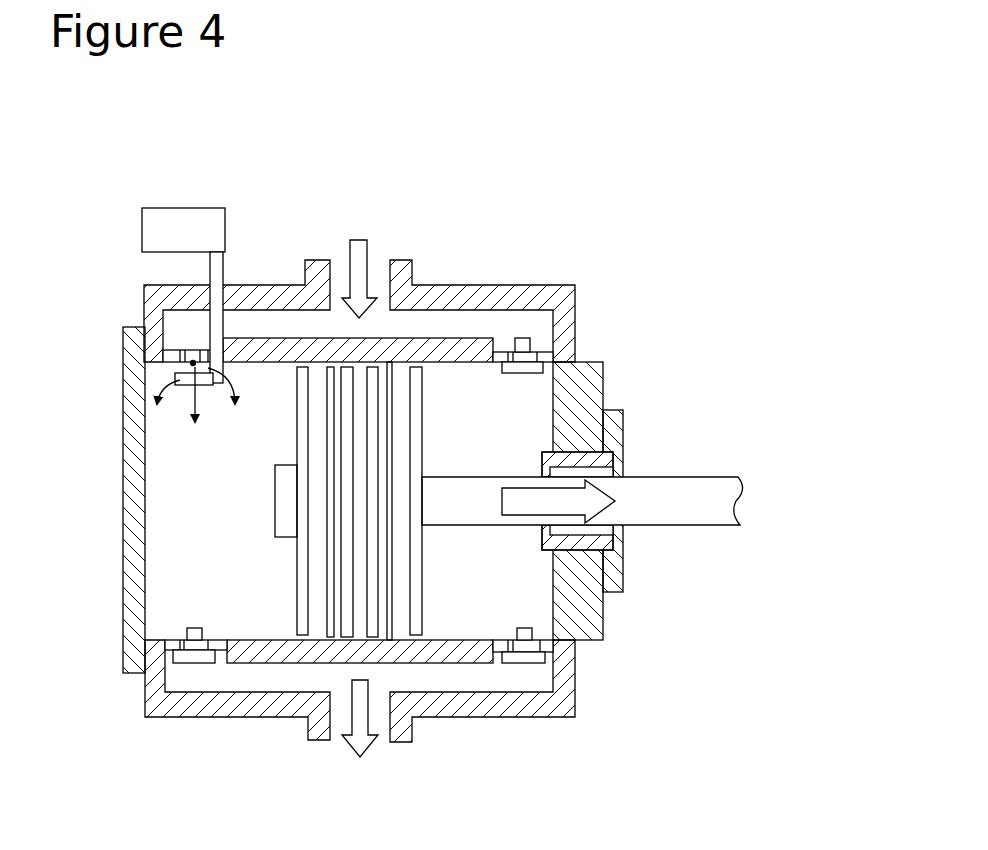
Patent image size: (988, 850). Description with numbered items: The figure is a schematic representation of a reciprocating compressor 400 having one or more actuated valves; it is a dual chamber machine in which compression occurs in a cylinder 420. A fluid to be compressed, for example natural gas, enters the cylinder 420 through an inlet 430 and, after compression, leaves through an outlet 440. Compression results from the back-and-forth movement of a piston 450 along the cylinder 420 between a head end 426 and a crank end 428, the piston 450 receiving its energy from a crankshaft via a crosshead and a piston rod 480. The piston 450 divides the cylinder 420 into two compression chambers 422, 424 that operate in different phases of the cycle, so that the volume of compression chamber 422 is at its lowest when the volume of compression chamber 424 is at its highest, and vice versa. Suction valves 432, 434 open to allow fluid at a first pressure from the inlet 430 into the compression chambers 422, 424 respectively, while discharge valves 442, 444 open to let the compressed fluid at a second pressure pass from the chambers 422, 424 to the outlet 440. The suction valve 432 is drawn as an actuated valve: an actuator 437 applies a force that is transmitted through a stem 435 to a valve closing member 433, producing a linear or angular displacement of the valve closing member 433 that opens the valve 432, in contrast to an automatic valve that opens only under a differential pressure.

The reciprocating compressor 400 is at (612, 232).
The cylinder 420 is at (437, 650).
The compression chamber 422 is at (163, 563).
The compression chamber 424 is at (523, 603).
The head end 426 is at (128, 486).
The crank end 428 is at (580, 400).
The inlet 430 is at (363, 252).
The suction valve 432 is at (190, 365).
The valve closing member 433 is at (178, 395).
The suction valve 434 is at (532, 370).
The stem 435 is at (218, 272).
The actuator 437 is at (170, 232).
The outlet 440 is at (358, 747).
The discharge valve 442 is at (190, 658).
The discharge valve 444 is at (527, 657).
The piston 450 is at (315, 623).
The piston rod 480 is at (667, 490).